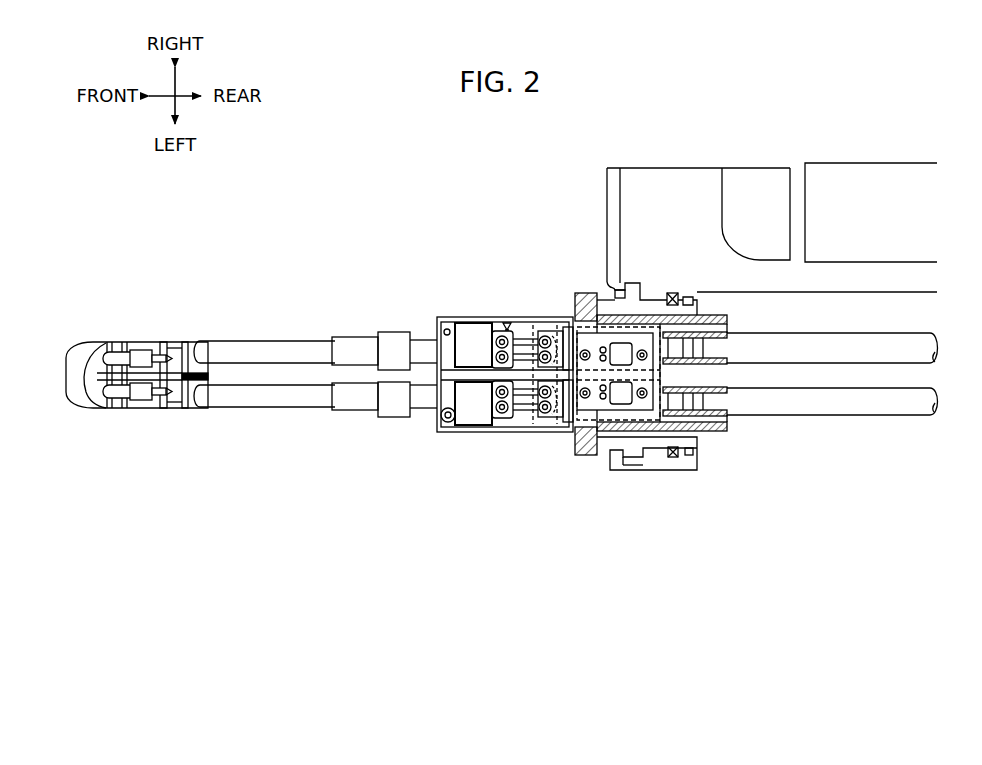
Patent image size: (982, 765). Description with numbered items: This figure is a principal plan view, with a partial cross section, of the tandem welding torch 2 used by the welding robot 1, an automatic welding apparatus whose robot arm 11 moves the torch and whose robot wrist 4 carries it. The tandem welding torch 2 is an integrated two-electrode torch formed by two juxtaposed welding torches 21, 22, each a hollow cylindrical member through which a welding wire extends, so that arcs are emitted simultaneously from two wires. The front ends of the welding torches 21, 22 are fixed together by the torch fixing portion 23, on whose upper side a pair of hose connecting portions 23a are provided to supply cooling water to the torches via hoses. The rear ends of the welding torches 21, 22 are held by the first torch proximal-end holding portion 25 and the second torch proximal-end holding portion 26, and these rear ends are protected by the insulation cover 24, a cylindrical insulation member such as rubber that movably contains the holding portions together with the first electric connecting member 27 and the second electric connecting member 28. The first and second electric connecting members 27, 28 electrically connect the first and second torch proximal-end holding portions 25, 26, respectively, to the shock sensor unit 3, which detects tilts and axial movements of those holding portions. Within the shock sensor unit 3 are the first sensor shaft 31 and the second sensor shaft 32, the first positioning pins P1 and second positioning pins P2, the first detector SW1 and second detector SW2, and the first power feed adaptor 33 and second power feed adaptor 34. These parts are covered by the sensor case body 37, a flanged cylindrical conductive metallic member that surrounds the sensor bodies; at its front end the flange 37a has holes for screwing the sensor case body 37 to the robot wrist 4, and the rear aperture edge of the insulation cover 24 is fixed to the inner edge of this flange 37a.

The welding robot 1 is at (900, 128).
The tandem welding torch 2 is at (282, 243).
The shock sensor unit 3 is at (398, 427).
The robot wrist 4 is at (683, 180).
The robot arm 11 is at (852, 169).
The welding torch 21 is at (270, 347).
The welding torch 22 is at (272, 398).
The torch fixing portion 23 is at (175, 346).
The hose connecting portions 23a is at (104, 362).
The insulation cover 24 is at (445, 324).
The first torch proximal-end holding portion 25 is at (443, 347).
The second torch proximal-end holding portion 26 is at (447, 398).
The first electric connecting member 27 is at (503, 318).
The second electric connecting member 28 is at (505, 432).
The first sensor shaft 31 is at (525, 318).
The second sensor shaft 32 is at (527, 432).
The first power feed adaptor 33 is at (728, 333).
The second power feed adaptor 34 is at (720, 386).
The sensor case body 37 is at (712, 436).
The flange 37a is at (587, 293).
The first positioning pins P1 is at (537, 318).
The second positioning pins P2 is at (540, 432).
The first detector SW1 is at (556, 318).
The second detector SW2 is at (558, 432).